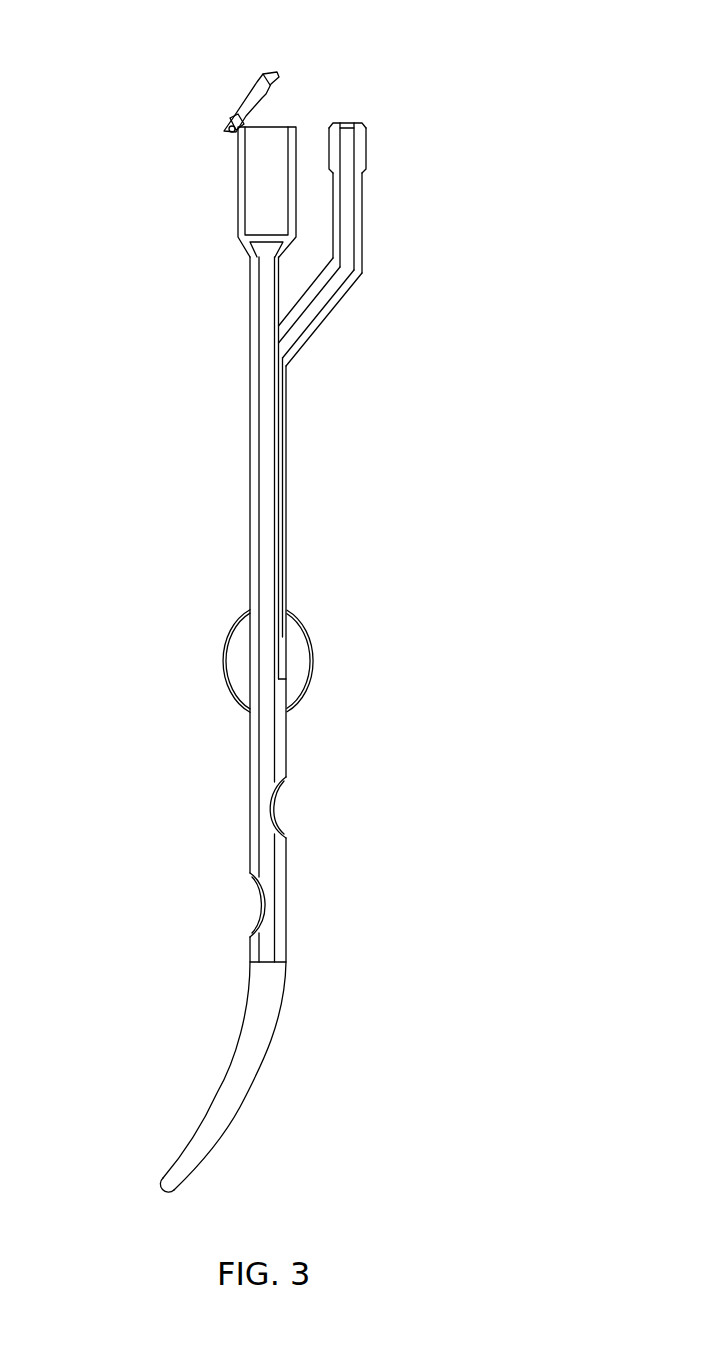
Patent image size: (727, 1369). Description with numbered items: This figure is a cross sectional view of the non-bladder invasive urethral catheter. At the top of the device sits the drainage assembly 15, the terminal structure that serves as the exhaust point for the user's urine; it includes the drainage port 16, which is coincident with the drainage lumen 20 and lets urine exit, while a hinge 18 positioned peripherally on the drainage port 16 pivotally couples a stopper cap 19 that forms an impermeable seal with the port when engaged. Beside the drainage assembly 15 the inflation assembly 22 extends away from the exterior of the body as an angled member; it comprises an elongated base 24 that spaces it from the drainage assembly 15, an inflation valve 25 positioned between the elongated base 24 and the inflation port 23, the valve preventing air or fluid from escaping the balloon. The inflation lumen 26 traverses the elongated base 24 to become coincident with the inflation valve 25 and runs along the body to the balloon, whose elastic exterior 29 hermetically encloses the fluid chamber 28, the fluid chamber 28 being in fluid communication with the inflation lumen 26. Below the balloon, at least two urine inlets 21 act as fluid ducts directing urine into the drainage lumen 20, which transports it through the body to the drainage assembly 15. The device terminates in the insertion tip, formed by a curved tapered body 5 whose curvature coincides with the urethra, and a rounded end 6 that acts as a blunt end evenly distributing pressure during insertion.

The curved tapered body 5 is at (268, 1041).
The rounded end 6 is at (160, 1177).
The drainage assembly 15 is at (208, 222).
The drainage port 16 is at (277, 117).
The hinge 18 is at (229, 133).
The stopper cap 19 is at (253, 83).
The drainage lumen 20 is at (256, 426).
The urine inlets 21 is at (300, 807).
The inflation assembly 22 is at (408, 243).
The inflation port 23 is at (351, 114).
The elongated base 24 is at (332, 308).
The inflation valve 25 is at (366, 150).
The inflation lumen 26 is at (304, 338).
The fluid chamber 28 is at (230, 662).
The elastic exterior 29 is at (244, 612).